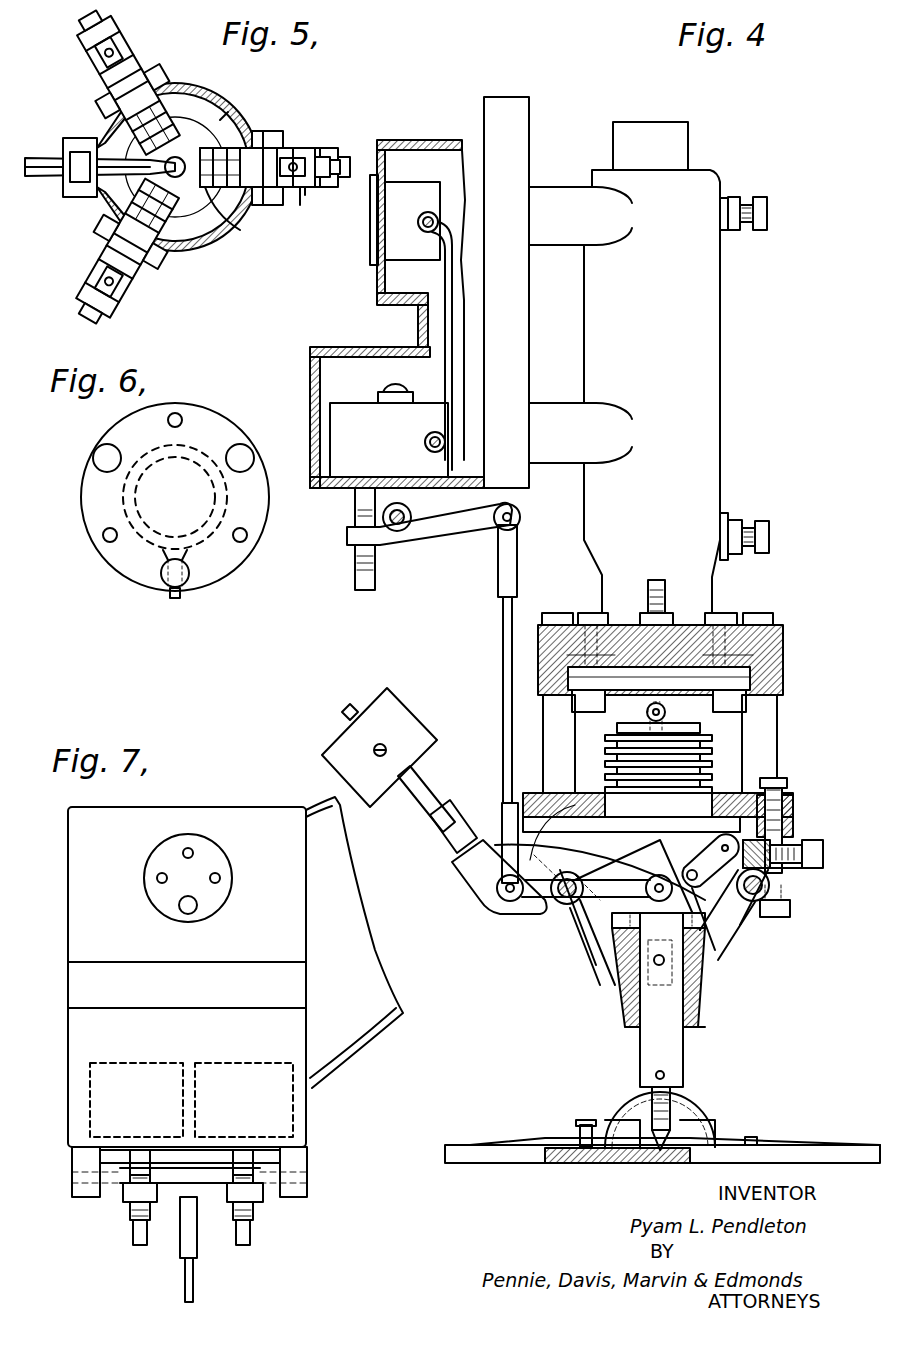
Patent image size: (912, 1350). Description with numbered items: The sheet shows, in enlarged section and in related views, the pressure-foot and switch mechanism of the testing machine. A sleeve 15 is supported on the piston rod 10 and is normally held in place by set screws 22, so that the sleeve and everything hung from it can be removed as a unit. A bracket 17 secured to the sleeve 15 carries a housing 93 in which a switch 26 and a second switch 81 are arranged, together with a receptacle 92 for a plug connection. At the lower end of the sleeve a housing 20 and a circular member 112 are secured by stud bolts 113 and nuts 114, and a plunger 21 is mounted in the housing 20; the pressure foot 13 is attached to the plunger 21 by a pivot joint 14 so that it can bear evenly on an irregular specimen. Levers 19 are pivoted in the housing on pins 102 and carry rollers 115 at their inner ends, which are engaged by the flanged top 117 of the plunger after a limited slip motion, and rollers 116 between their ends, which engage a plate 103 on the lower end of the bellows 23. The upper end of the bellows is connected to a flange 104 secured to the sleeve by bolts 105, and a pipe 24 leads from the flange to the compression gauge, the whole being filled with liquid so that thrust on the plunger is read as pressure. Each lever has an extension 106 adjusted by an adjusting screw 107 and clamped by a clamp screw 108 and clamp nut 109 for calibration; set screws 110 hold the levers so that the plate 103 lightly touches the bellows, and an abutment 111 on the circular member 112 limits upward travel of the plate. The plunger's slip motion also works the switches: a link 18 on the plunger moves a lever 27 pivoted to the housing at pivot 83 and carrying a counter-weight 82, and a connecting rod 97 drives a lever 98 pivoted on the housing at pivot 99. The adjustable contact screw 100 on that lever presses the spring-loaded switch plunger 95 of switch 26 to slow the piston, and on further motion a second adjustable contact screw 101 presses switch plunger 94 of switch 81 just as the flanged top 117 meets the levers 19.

In FIG. 4, the piston rod 10 is at (690, 142).
In FIG. 4, the pressure foot 13 is at (480, 1145).
In FIG. 4, the pivot joint 14 is at (635, 1110).
In FIG. 4, the sleeve 15 is at (722, 382).
In FIG. 4, the bracket 17 is at (529, 113).
In FIG. 4, the link 18 is at (618, 958).
In FIG. 4, the levers 19 is at (790, 882).
In FIG. 5, the levers 19 is at (313, 187).
In FIG. 4, the housing 20 is at (698, 1000).
In FIG. 5, the housing 20 is at (208, 240).
In FIG. 4, the plunger 21 is at (684, 1048).
In FIG. 4, the set screws 22 is at (767, 203).
In FIG. 4, the bellows 23 is at (720, 768).
In FIG. 6, the bellows 23 is at (122, 508).
In FIG. 4, the pipe 24 is at (640, 705).
In FIG. 6, the pipe 24 is at (180, 598).
In FIG. 4, the switch 26 is at (338, 460).
In FIG. 7, the switch 26 is at (248, 1068).
In FIG. 4, the lever 27 is at (456, 876).
In FIG. 5, the lever 27 is at (45, 180).
In FIG. 7, the second switch 81 is at (138, 1068).
In FIG. 4, the counter-weight 82 is at (322, 746).
In FIG. 4, the pivot 83 is at (562, 905).
In FIG. 4, the receptacle 92 is at (370, 262).
In FIG. 7, the receptacle 92 is at (230, 862).
In FIG. 4, the housing 93 is at (310, 378).
In FIG. 7, the switch plunger 94 is at (100, 1156).
In FIG. 4, the switch plunger 95 is at (355, 510).
In FIG. 7, the switch plunger 95 is at (263, 1155).
In FIG. 4, the connecting rod 97 is at (503, 675).
In FIG. 7, the connecting rod 97 is at (185, 1280).
In FIG. 4, the lever 98 is at (347, 538).
In FIG. 7, the lever 98 is at (245, 1195).
In FIG. 4, the pivot 99 is at (400, 530).
In FIG. 7, the pivot 99 is at (265, 1181).
In FIG. 4, the adjustable contact screw 100 is at (357, 578).
In FIG. 7, the adjustable contact screw 100 is at (247, 1245).
In FIG. 7, the second adjustable contact screw 101 is at (130, 1222).
In FIG. 4, the pins 102 is at (760, 900).
In FIG. 5, the pins 102 is at (275, 131).
In FIG. 4, the plate 103 is at (625, 818).
In FIG. 4, the flange 104 is at (760, 670).
In FIG. 6, the flange 104 is at (118, 562).
In FIG. 4, the bolts 105 is at (725, 625).
In FIG. 4, the extensions 106 is at (800, 872).
In FIG. 5, the extensions 106 is at (308, 150).
In FIG. 4, the adjusting screws 107 is at (825, 854).
In FIG. 5, the adjusting screws 107 is at (338, 162).
In FIG. 4, the clamp screws 108 is at (792, 908).
In FIG. 5, the clamp screws 108 is at (275, 205).
In FIG. 4, the clamp nuts 109 is at (785, 842).
In FIG. 5, the clamp nuts 109 is at (303, 190).
In FIG. 4, the set screws 110 is at (784, 784).
In FIG. 4, the abutment 111 is at (545, 800).
In FIG. 4, the circular member 112 is at (795, 800).
In FIG. 4, the stud bolts 113 is at (543, 718).
In FIG. 4, the nuts 114 is at (553, 613).
In FIG. 4, the rollers 115 is at (718, 940).
In FIG. 5, the rollers 115 is at (212, 215).
In FIG. 4, the rollers 116 is at (762, 900).
In FIG. 5, the rollers 116 is at (258, 195).
In FIG. 4, the flanged top 117 is at (742, 955).
In FIG. 5, the flanged top 117 is at (215, 125).